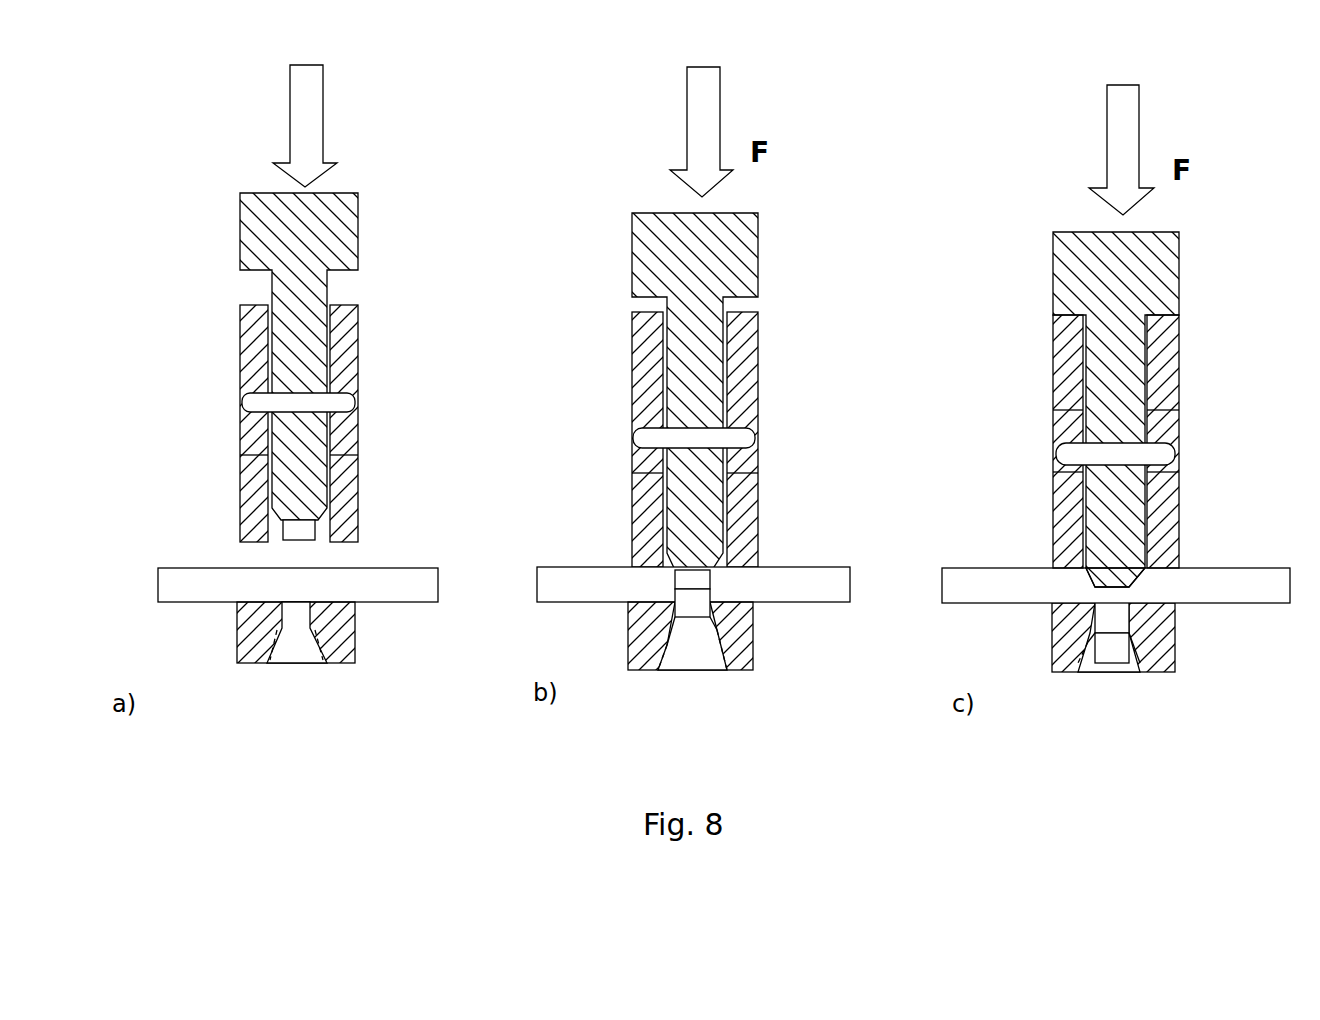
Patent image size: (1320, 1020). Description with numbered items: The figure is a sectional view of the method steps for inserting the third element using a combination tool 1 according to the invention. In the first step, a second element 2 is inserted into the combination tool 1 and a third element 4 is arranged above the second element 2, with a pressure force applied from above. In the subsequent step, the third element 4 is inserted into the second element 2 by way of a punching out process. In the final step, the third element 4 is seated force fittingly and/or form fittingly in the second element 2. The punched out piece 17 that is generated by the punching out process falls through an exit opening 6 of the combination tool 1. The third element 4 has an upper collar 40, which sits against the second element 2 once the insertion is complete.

The combination tool 1 is at (203, 103).
The second element 2 is at (188, 582).
The third element 4 is at (300, 530).
The exit opening 6 is at (688, 650).
The punched out piece 17 is at (687, 607).
The upper collar 40 is at (1110, 582).